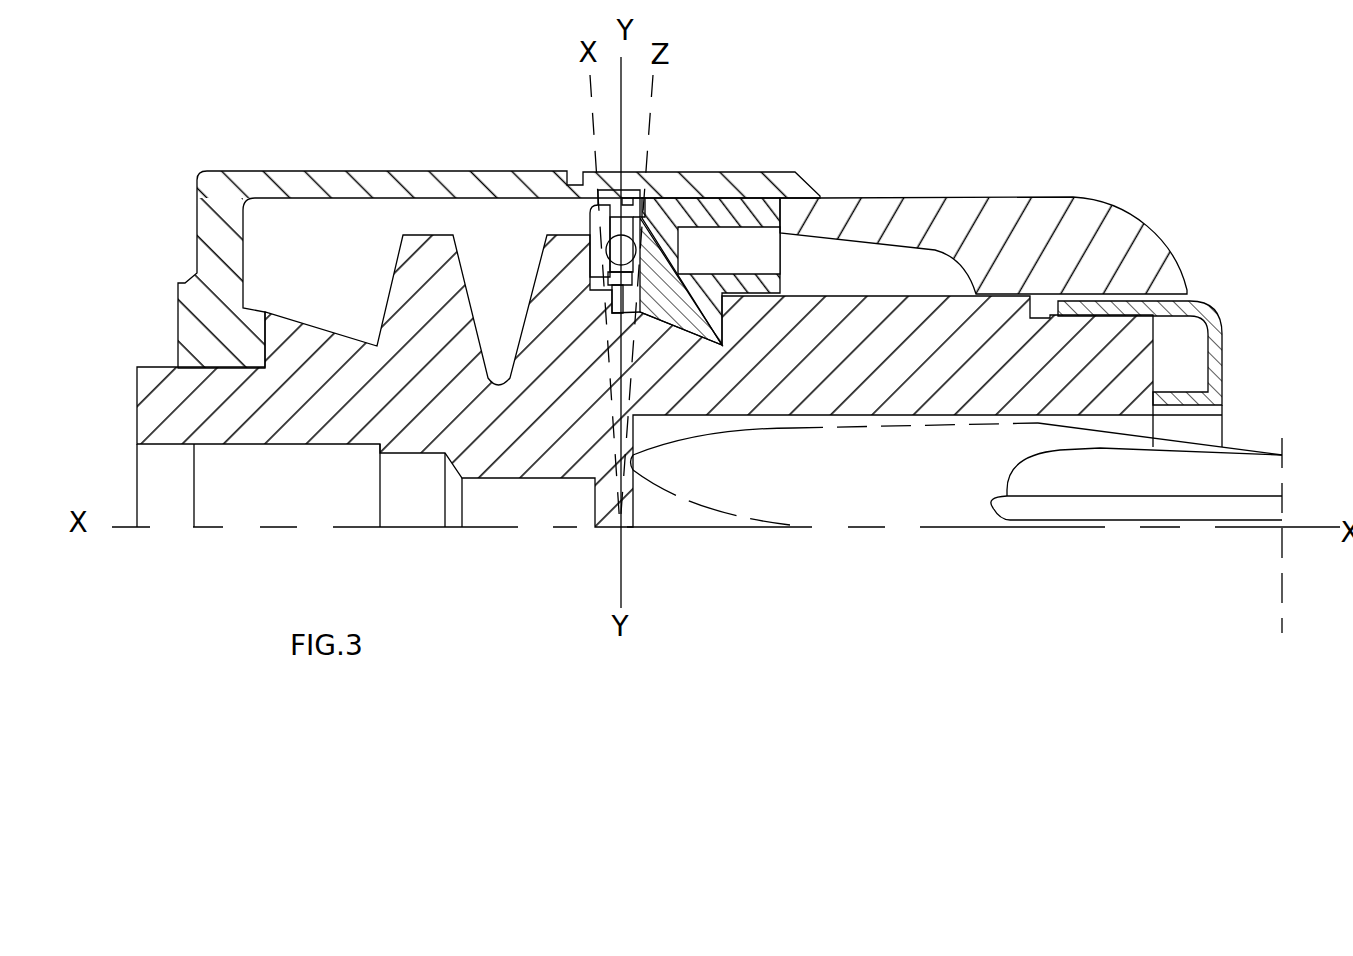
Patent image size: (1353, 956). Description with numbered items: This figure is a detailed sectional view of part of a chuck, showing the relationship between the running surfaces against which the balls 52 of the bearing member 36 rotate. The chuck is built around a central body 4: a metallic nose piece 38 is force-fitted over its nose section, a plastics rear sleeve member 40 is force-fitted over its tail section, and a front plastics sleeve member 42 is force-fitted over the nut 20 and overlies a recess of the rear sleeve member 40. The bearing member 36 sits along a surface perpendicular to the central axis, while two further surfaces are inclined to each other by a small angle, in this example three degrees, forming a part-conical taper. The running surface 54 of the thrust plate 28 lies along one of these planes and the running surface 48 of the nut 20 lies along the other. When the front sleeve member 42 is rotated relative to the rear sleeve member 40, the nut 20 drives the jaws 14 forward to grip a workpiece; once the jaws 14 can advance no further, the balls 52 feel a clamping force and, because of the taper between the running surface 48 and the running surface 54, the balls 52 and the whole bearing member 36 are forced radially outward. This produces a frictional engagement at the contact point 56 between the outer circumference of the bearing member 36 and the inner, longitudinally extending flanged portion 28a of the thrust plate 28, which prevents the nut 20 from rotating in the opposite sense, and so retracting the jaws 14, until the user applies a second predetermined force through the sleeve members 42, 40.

The central body 4 is at (327, 362).
The jaws 14 is at (937, 512).
The nut 20 is at (760, 213).
The thrust plate 28 is at (595, 212).
The flanged portion of the thrust plate 28a is at (607, 185).
The bearing member 36 is at (690, 320).
The nose piece 38 is at (1210, 327).
The rear sleeve member 40 is at (218, 232).
The front sleeve member 42 is at (1092, 218).
The running surface of the nut 48 is at (637, 183).
The balls 52 is at (618, 251).
The running surface of the thrust plate 54 is at (600, 218).
The point of frictional engagement 56 is at (627, 183).